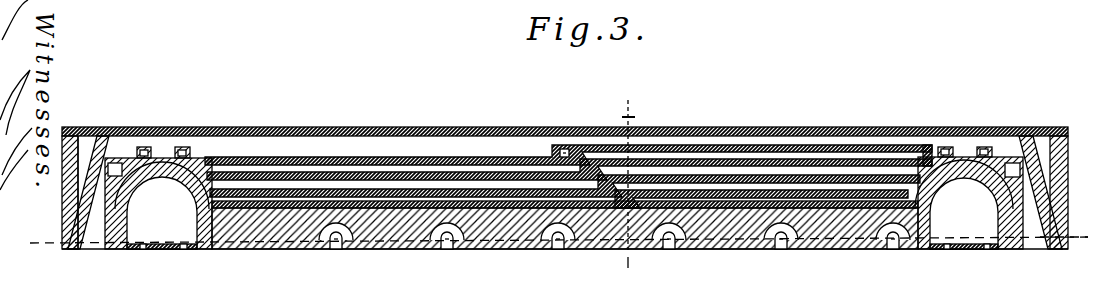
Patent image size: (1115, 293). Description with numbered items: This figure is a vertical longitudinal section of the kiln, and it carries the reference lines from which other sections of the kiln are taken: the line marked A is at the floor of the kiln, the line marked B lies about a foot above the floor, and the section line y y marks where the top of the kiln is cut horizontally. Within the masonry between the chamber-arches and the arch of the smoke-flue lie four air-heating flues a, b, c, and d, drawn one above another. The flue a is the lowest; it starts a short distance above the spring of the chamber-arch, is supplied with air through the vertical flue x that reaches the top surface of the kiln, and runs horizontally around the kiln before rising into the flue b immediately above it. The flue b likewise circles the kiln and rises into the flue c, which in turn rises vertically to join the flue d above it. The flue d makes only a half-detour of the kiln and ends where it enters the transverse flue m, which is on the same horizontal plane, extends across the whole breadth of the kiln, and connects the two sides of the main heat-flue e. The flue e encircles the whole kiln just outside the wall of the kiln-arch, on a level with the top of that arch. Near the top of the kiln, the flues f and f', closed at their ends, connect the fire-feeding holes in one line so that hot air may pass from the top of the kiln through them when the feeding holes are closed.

The heating-air flue a is at (276, 198).
The heating-air flue b is at (299, 188).
The heating-air flue c is at (328, 168).
The heating-air flue d is at (815, 153).
The main heat-flue e is at (117, 163).
The connecting flue f is at (1009, 161).
The connecting flue f' is at (161, 120).
The transverse flue m is at (565, 150).
The vertical flue x is at (629, 164).
The section line y y is at (628, 273).
The section line A is at (546, 237).
The section line B is at (1073, 233).